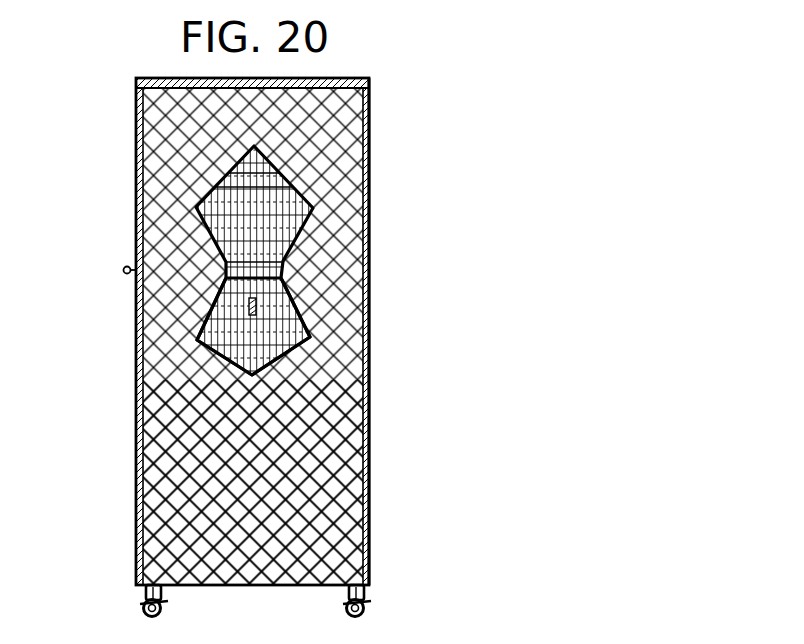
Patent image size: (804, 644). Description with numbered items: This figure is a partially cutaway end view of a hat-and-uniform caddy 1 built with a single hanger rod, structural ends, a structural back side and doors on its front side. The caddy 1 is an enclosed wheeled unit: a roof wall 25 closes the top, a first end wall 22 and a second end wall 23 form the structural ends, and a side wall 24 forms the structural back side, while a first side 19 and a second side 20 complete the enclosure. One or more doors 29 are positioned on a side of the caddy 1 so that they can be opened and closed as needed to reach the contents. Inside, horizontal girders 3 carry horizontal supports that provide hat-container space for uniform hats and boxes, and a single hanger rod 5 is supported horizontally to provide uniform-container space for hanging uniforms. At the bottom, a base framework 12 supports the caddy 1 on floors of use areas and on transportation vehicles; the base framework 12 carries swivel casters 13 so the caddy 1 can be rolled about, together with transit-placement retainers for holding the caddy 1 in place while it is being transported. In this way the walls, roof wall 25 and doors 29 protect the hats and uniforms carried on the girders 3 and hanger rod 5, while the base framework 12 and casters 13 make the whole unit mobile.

The hat-and-uniform caddy 1 is at (397, 59).
The horizontal girders 3 is at (253, 182).
The hanger rod 5 is at (258, 306).
The base framework 12 is at (399, 602).
The swivel casters 13 is at (140, 604).
The first side 19 is at (150, 343).
The second side 20 is at (368, 420).
The first end wall 22 is at (265, 340).
The second end wall 23 is at (283, 388).
The side wall 24 is at (366, 473).
The roof wall 25 is at (168, 82).
The doors 29 is at (140, 428).